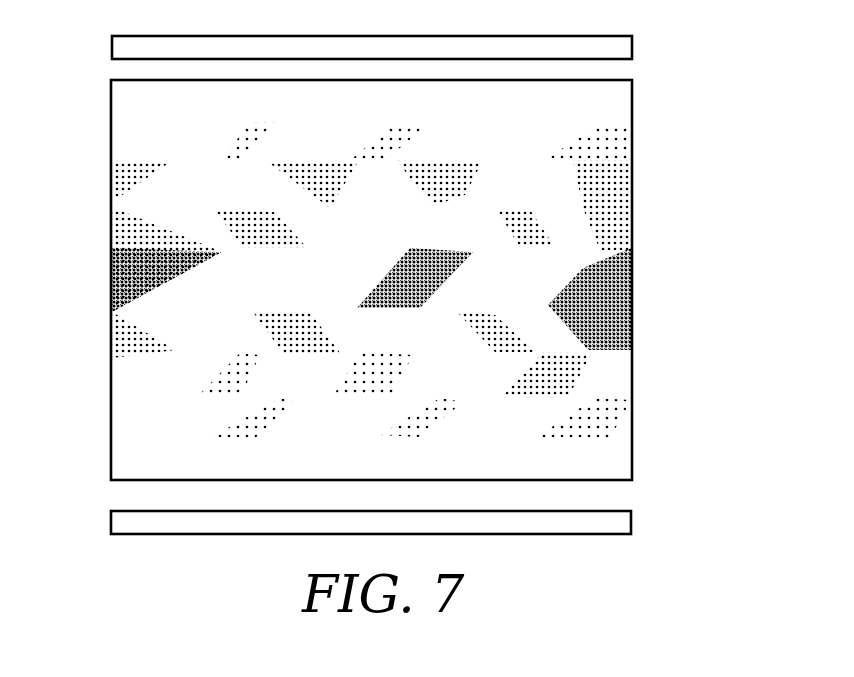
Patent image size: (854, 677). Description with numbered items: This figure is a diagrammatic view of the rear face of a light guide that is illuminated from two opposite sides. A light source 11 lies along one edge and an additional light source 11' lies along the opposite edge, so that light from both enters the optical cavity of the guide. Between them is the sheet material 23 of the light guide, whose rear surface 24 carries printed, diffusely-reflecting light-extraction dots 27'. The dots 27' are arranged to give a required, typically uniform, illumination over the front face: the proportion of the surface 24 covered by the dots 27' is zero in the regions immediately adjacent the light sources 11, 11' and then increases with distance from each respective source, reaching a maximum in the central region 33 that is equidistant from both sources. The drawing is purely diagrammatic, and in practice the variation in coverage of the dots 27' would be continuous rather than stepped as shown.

The additional light source 11' is at (403, 35).
The light source 11 is at (398, 525).
The sheet material 23 is at (625, 97).
The rear surface 24 is at (362, 111).
The light-extraction dots 27' is at (618, 281).
The central region 33 is at (98, 228).